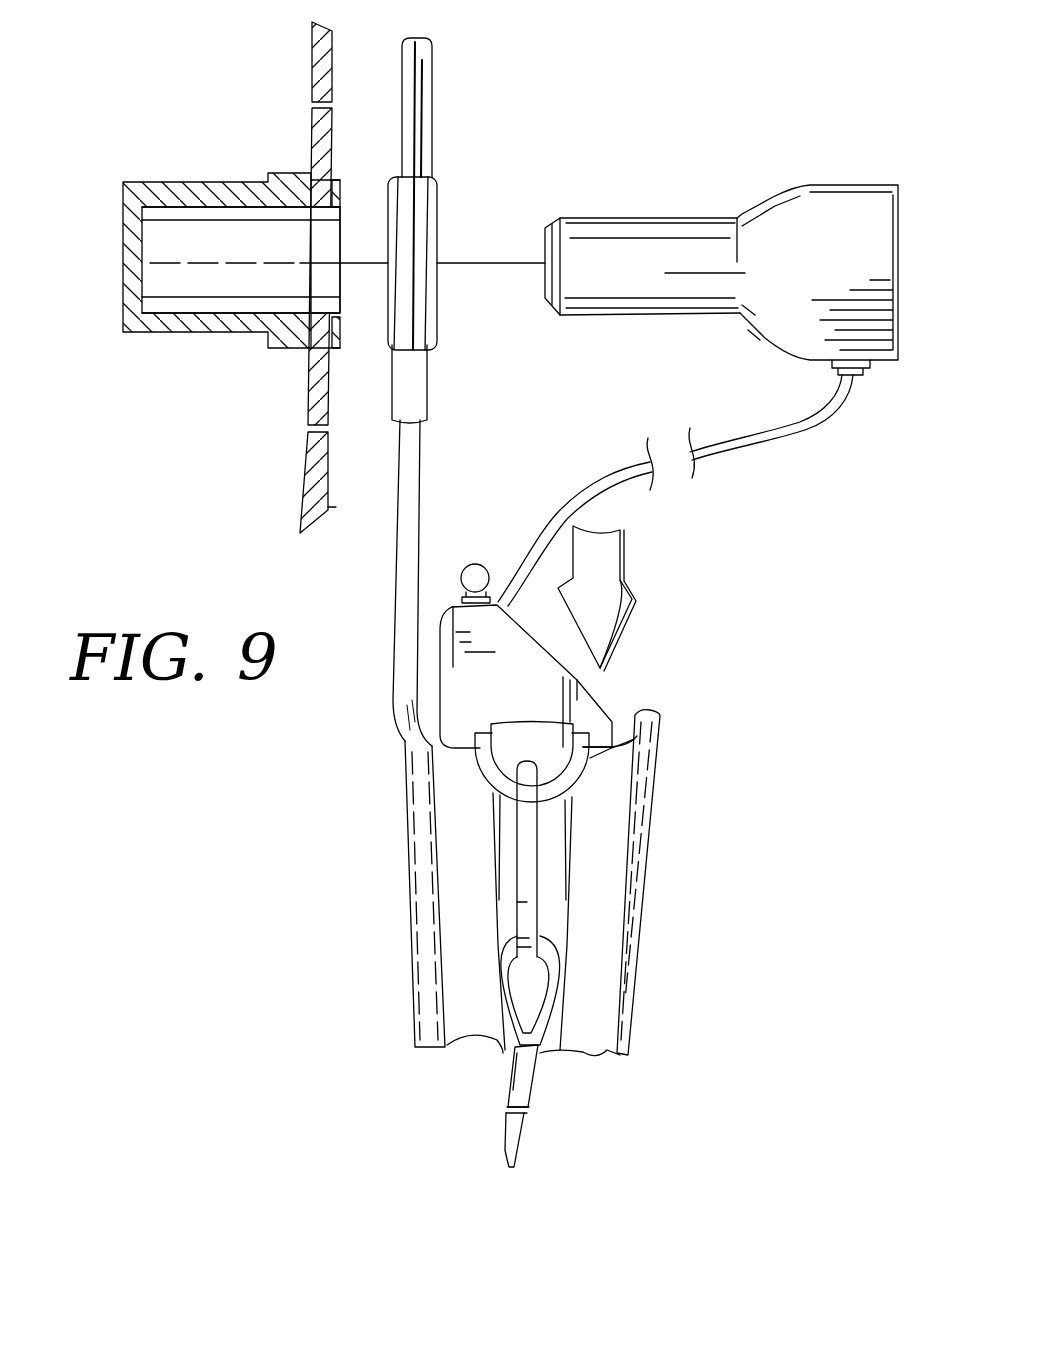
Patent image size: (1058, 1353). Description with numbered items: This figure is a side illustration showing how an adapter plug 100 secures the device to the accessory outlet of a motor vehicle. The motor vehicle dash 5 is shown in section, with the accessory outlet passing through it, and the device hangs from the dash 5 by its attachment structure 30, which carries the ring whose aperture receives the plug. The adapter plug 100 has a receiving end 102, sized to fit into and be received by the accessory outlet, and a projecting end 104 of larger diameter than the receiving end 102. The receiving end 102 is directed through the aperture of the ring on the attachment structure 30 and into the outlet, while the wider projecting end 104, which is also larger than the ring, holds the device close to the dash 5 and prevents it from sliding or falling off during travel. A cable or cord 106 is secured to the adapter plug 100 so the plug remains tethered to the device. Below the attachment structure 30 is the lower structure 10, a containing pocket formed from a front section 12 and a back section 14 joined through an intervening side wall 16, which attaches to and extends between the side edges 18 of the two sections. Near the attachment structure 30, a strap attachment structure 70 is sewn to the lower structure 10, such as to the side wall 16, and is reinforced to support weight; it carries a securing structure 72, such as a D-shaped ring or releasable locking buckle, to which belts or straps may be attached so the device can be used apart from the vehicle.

The motor vehicle dash 5 is at (312, 80).
The attachment structure 30 is at (446, 427).
The adapter plug 100 is at (711, 358).
The receiving end 102 is at (581, 216).
The projecting end 104 is at (868, 214).
The cable or cord 106 is at (780, 427).
The lower structure 10 is at (573, 865).
The securing structure 72 is at (480, 772).
The strap attachment structure 70 is at (570, 847).
The back section 14 is at (420, 997).
The side wall 16 is at (654, 882).
The side edge 18 is at (630, 917).
The front section 12 is at (633, 1020).